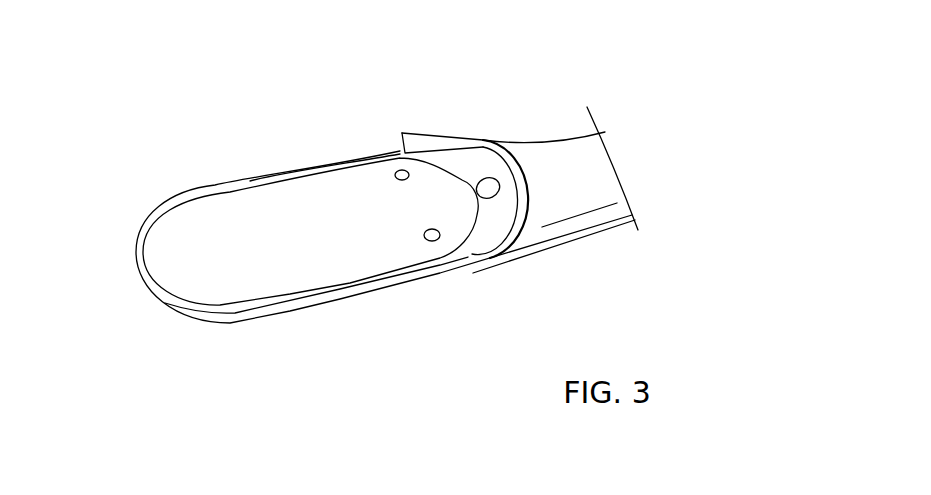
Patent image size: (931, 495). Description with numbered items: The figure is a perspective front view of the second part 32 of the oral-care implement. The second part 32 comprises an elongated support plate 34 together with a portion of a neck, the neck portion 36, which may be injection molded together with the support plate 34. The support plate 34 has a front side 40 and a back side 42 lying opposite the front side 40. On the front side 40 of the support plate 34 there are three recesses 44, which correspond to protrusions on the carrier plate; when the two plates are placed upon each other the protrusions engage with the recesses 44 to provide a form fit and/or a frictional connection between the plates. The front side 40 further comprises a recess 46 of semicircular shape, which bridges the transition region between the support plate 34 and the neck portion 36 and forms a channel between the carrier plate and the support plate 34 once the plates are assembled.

The second part 32 is at (533, 118).
The support plate 34 is at (165, 248).
The neck portion 36 is at (577, 202).
The front side 40 is at (220, 211).
The back side 42 is at (223, 320).
The recesses 44 is at (431, 229).
The recess 46 is at (465, 271).